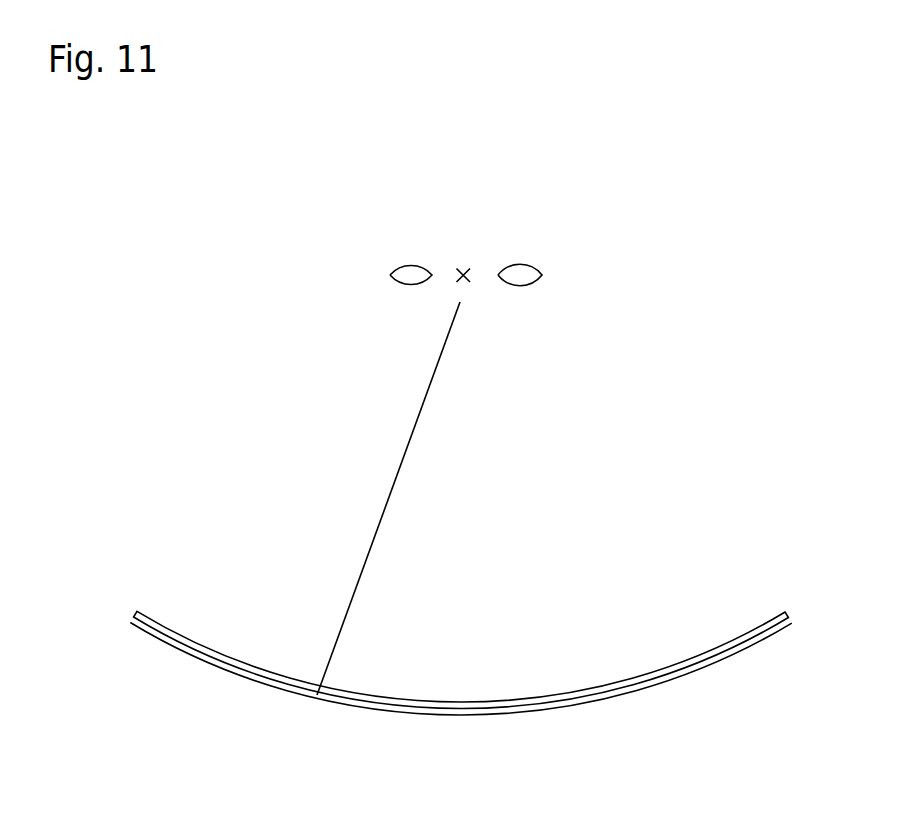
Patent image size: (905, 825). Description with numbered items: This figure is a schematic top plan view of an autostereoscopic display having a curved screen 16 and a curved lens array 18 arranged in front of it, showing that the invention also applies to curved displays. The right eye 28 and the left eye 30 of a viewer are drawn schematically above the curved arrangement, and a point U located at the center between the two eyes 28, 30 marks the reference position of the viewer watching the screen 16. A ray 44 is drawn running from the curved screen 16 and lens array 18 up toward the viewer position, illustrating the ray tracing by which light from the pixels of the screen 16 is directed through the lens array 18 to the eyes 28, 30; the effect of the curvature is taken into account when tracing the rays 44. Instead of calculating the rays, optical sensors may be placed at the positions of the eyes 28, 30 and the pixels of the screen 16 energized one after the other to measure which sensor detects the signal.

The reference position U is at (464, 270).
The left eye 30 is at (403, 266).
The right eye 28 is at (523, 266).
The ray 44 is at (385, 502).
The curved lens array 18 is at (237, 657).
The curved screen 16 is at (275, 690).